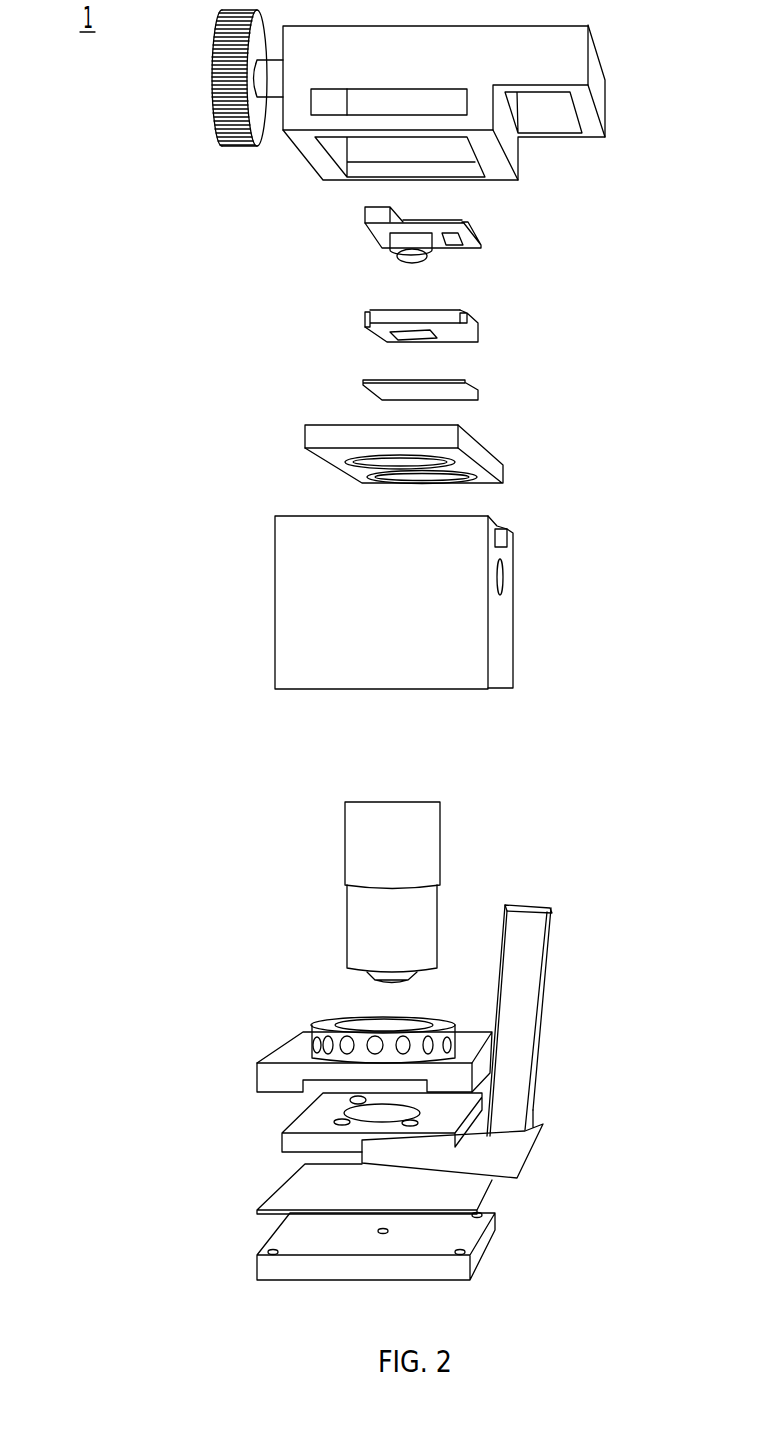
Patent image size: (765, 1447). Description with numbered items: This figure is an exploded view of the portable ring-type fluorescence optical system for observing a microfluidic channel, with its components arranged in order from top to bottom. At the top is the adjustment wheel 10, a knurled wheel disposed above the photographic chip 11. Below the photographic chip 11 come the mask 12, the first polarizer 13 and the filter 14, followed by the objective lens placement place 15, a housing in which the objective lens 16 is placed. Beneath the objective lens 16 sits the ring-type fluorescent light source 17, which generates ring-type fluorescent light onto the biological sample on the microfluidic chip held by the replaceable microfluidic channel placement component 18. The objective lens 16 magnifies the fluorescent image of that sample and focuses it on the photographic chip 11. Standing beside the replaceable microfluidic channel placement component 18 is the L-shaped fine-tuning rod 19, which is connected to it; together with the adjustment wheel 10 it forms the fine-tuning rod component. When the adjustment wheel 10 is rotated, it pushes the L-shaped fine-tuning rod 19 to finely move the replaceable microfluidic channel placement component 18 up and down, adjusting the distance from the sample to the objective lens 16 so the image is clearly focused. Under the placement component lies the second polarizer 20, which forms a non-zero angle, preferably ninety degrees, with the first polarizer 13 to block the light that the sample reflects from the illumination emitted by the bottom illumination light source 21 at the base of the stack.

The adjustment wheel 10 is at (210, 61).
The photographic chip 11 is at (363, 212).
The mask 12 is at (385, 315).
The first polarizer 13 is at (460, 378).
The filter 14 is at (473, 450).
The objective lens placement place 15 is at (460, 567).
The objective lens 16 is at (418, 827).
The ring-type fluorescent light source 17 is at (320, 1025).
The replaceable microfluidic channel placement component 18 is at (303, 1140).
The L-shaped fine-tuning rod 19 is at (525, 985).
The second polarizer 20 is at (468, 1188).
The bottom illumination light source 21 is at (457, 1268).